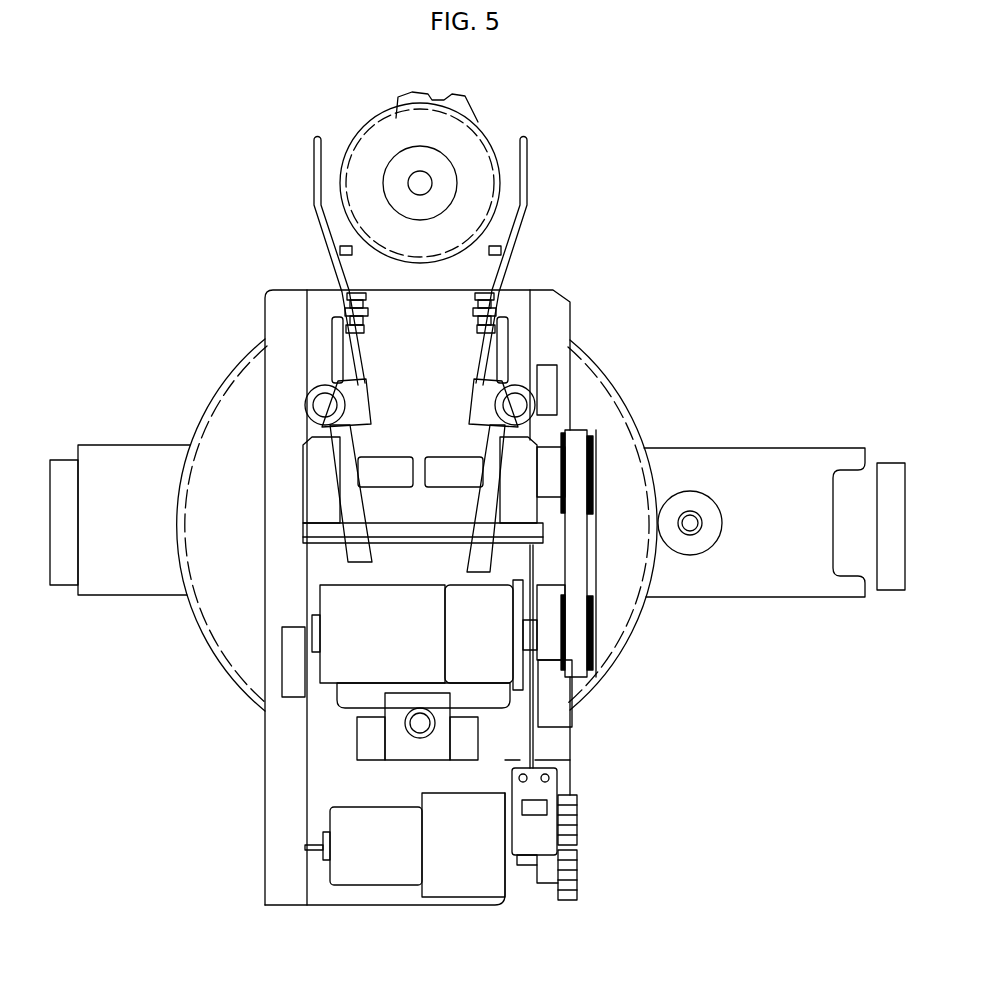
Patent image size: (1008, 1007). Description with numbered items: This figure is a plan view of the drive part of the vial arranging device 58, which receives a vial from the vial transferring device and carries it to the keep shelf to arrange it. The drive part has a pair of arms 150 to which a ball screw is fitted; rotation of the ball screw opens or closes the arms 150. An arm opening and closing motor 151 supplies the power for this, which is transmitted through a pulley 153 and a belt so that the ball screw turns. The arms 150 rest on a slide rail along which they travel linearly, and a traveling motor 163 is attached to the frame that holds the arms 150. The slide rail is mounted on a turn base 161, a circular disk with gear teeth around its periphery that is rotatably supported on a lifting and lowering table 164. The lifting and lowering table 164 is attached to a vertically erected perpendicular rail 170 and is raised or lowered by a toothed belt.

The vial arranging device 58 is at (178, 170).
The arms 150 is at (312, 166).
The arm opening and closing motor 151 is at (332, 663).
The pulley 153 is at (590, 645).
The turn base 161 is at (631, 405).
The traveling motor 163 is at (380, 875).
The lifting and lowering table 164 is at (802, 568).
The perpendicular rail 170 is at (62, 578).